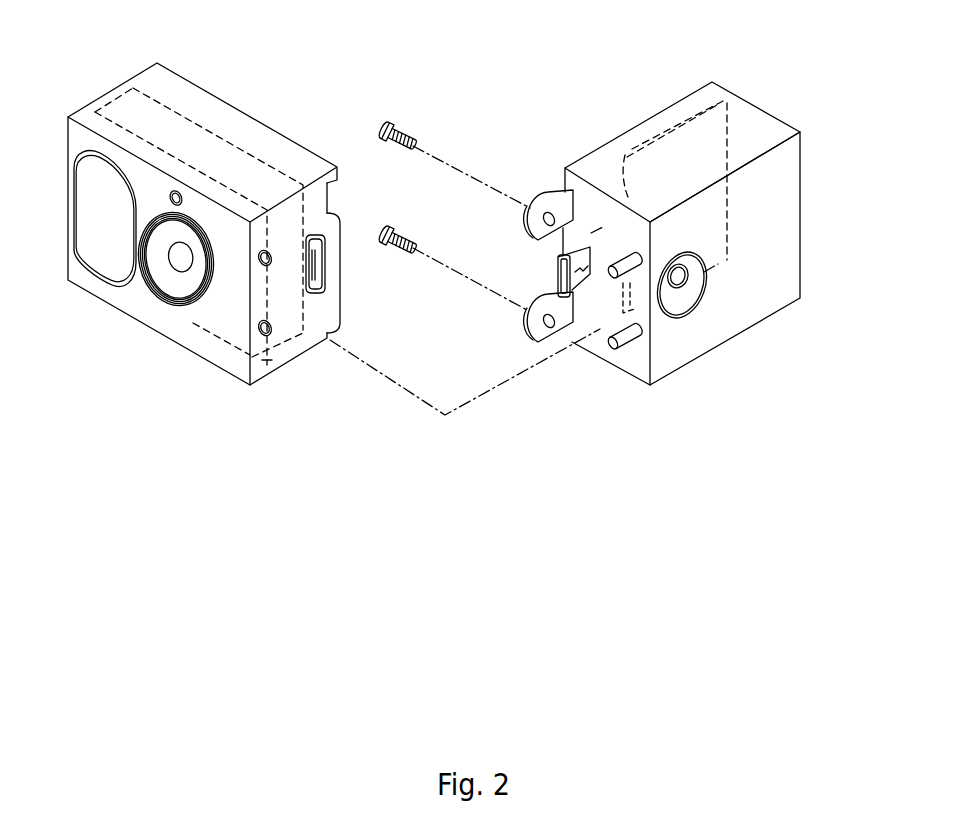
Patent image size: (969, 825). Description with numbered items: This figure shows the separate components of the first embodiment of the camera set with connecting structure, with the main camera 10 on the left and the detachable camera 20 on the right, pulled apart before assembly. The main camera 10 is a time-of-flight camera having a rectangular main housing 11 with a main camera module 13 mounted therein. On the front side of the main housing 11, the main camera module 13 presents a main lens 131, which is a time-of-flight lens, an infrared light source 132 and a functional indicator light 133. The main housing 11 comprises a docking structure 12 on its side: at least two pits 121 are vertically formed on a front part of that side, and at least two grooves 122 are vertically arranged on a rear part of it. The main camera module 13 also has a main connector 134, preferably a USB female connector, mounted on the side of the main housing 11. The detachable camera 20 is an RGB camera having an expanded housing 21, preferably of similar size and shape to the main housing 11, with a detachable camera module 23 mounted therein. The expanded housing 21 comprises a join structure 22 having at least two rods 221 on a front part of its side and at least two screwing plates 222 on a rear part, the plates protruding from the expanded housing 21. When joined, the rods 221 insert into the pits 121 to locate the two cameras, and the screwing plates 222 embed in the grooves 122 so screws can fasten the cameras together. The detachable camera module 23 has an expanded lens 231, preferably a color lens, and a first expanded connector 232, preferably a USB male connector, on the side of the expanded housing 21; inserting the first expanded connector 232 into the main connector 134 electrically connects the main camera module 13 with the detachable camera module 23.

The main camera 10 is at (98, 78).
The main housing 11 is at (152, 82).
The docking structure 12 is at (302, 370).
The main camera module 13 is at (183, 105).
The pits 121 is at (265, 335).
The grooves 122 is at (328, 214).
The main lens 131 is at (185, 278).
The infrared light source 132 is at (112, 268).
The functional indicator light 133 is at (181, 192).
The main connector 134 is at (312, 266).
The detachable camera 20 is at (832, 266).
The expanded housing 21 is at (715, 90).
The join structure 22 is at (610, 377).
The detachable camera module 23 is at (660, 117).
The rods 221 is at (627, 338).
The screwing plates 222 is at (555, 195).
The expanded lens 231 is at (688, 283).
The first expanded connector 232 is at (556, 292).